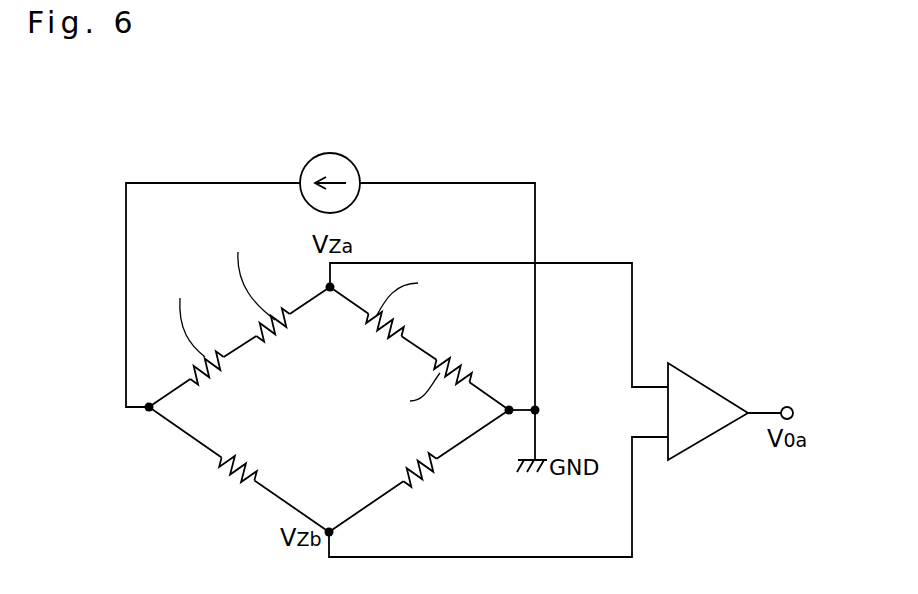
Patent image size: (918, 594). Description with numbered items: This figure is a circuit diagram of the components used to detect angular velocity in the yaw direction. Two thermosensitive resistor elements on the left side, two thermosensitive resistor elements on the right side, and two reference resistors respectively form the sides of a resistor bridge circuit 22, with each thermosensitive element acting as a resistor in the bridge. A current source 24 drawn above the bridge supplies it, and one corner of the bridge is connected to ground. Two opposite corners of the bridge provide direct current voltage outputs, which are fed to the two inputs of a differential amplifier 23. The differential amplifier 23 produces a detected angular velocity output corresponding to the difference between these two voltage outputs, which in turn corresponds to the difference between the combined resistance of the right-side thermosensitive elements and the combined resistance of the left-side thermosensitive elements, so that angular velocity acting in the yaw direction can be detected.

The resistor bridge circuit 22 is at (187, 464).
The differential amplifier 23 is at (692, 380).
The current source (Io) 24 is at (336, 154).